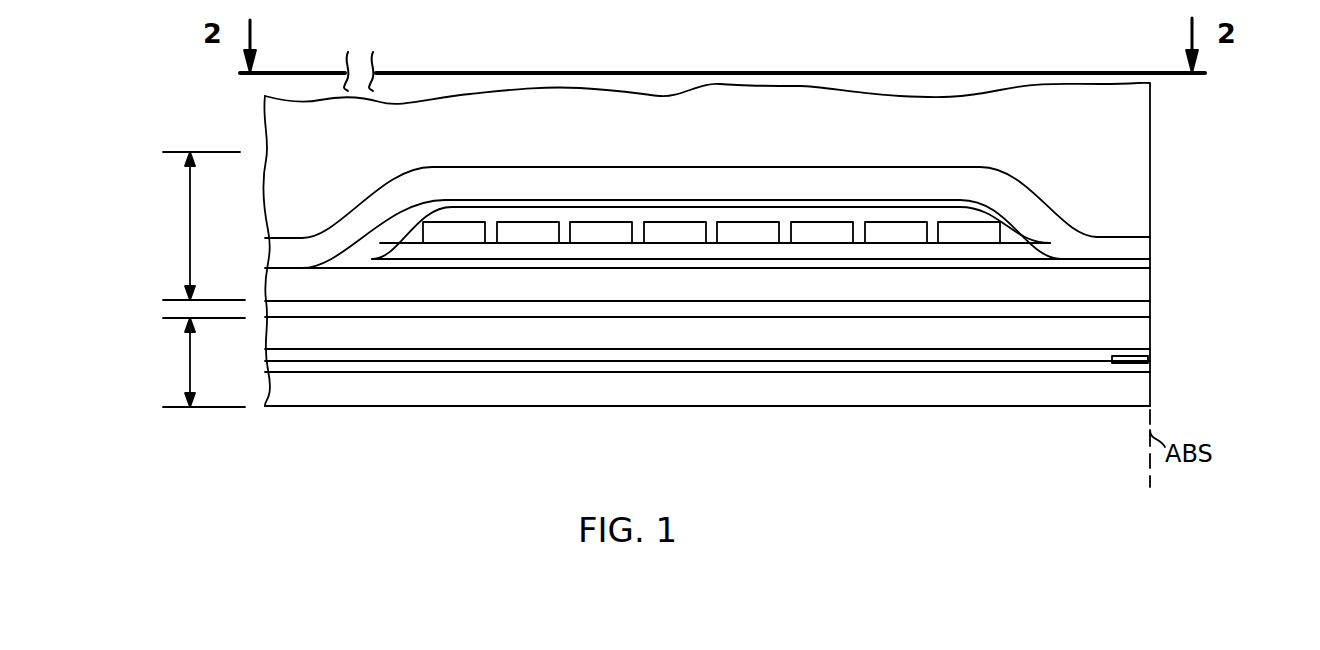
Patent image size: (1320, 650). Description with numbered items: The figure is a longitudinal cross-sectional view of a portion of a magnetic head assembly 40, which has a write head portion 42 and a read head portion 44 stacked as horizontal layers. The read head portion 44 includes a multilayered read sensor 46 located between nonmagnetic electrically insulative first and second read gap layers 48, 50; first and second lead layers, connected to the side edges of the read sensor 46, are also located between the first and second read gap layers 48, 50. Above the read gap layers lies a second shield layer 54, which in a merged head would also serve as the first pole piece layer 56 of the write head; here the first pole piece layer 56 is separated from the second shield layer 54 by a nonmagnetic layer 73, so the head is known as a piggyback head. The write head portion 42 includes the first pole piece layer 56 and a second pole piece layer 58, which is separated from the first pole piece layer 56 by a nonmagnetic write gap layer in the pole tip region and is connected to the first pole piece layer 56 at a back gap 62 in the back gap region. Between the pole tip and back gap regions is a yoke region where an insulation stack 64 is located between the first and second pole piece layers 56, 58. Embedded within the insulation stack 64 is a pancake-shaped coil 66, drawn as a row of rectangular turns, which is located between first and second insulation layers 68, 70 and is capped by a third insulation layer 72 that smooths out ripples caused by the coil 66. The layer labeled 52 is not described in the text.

The magnetic head assembly 40 is at (1180, 127).
The write head portion 42 is at (188, 226).
The read head portion 44 is at (187, 360).
The read sensor 46 is at (1093, 262).
The first read gap layer 48 is at (708, 373).
The second read gap layer 50 is at (641, 350).
The read gap layer 52 is at (843, 387).
The second shield layer 54 is at (888, 330).
The first pole piece layer 56 is at (1015, 287).
The second pole piece layer 58 is at (585, 184).
The back gap 62 is at (290, 262).
The insulation stack 64 is at (882, 188).
The coil 66 is at (748, 233).
The first insulation layer 68 is at (542, 253).
The second insulation layer 70 is at (526, 214).
The third insulation layer 72 is at (478, 197).
The nonmagnetic layer 73 is at (948, 310).